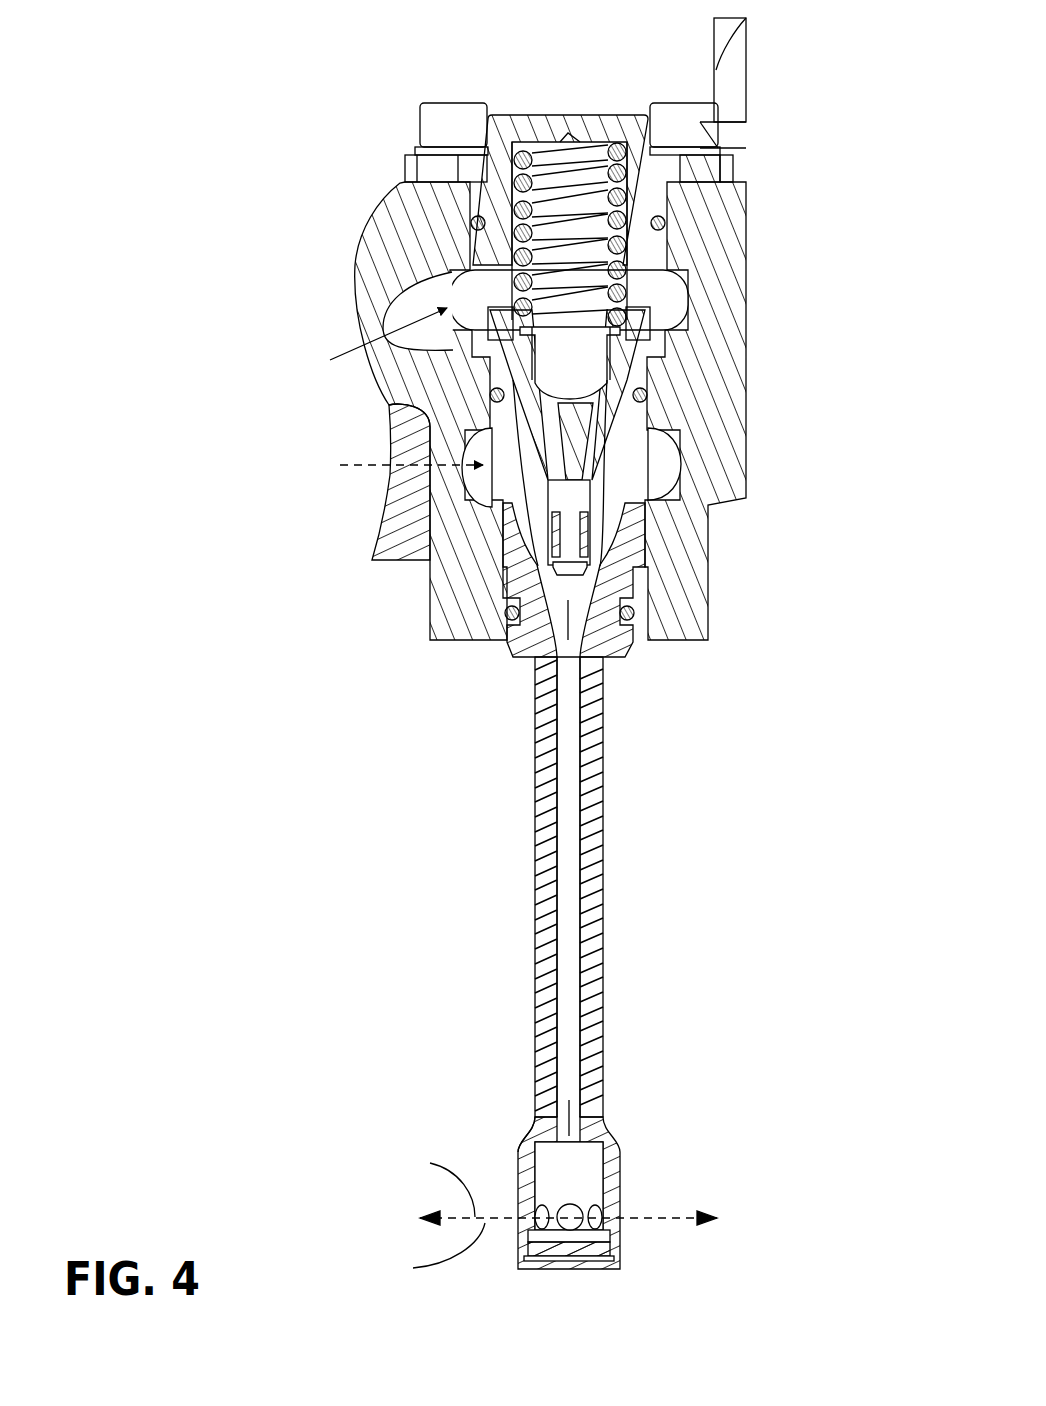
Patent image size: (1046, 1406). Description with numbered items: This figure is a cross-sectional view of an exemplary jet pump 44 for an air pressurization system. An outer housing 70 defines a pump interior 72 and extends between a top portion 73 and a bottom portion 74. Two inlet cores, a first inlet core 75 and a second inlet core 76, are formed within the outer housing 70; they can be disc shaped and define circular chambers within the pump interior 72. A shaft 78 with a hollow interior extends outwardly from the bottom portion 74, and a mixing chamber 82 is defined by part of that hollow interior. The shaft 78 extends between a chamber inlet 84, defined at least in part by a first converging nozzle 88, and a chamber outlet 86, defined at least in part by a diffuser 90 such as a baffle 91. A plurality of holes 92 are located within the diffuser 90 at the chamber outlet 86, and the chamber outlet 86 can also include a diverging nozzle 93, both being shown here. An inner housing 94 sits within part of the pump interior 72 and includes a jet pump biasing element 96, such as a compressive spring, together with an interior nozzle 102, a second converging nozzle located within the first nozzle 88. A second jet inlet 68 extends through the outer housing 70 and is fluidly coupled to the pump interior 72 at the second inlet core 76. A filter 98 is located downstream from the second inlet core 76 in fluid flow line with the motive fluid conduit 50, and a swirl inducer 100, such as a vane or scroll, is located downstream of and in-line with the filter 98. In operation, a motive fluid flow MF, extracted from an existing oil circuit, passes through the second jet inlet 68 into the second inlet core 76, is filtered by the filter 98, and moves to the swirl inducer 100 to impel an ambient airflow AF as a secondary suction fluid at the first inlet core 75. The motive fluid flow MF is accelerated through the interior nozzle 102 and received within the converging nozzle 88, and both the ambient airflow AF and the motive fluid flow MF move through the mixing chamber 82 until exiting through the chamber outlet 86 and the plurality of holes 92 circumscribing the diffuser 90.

The jet pump 44 is at (930, 72).
The motive fluid conduit 50 is at (430, 287).
The second jet inlet 68 is at (403, 313).
The outer housing 70 is at (733, 350).
The pump interior 72 is at (586, 236).
The top portion 73 is at (585, 118).
The bottom portion 74 is at (635, 640).
The first inlet core 75 is at (662, 463).
The second inlet core 76 is at (668, 295).
The shaft 78 is at (592, 900).
The mixing chamber 82 is at (568, 907).
The chamber inlet 84 is at (565, 600).
The chamber outlet 86 is at (570, 1138).
The first nozzle 88 is at (605, 553).
The diffuser 90 is at (612, 1167).
The baffle 91 is at (549, 1186).
The plurality of holes 92 is at (596, 1222).
The diverging nozzle 93 is at (530, 1125).
The inner housing 94 is at (592, 440).
The jet pump biasing element 96 is at (553, 150).
The filter 98 is at (567, 353).
The swirl inducer 100 is at (545, 478).
The interior nozzle 102 is at (537, 503).
The motive fluid flow MF is at (327, 360).
The ambient airflow AF is at (420, 468).